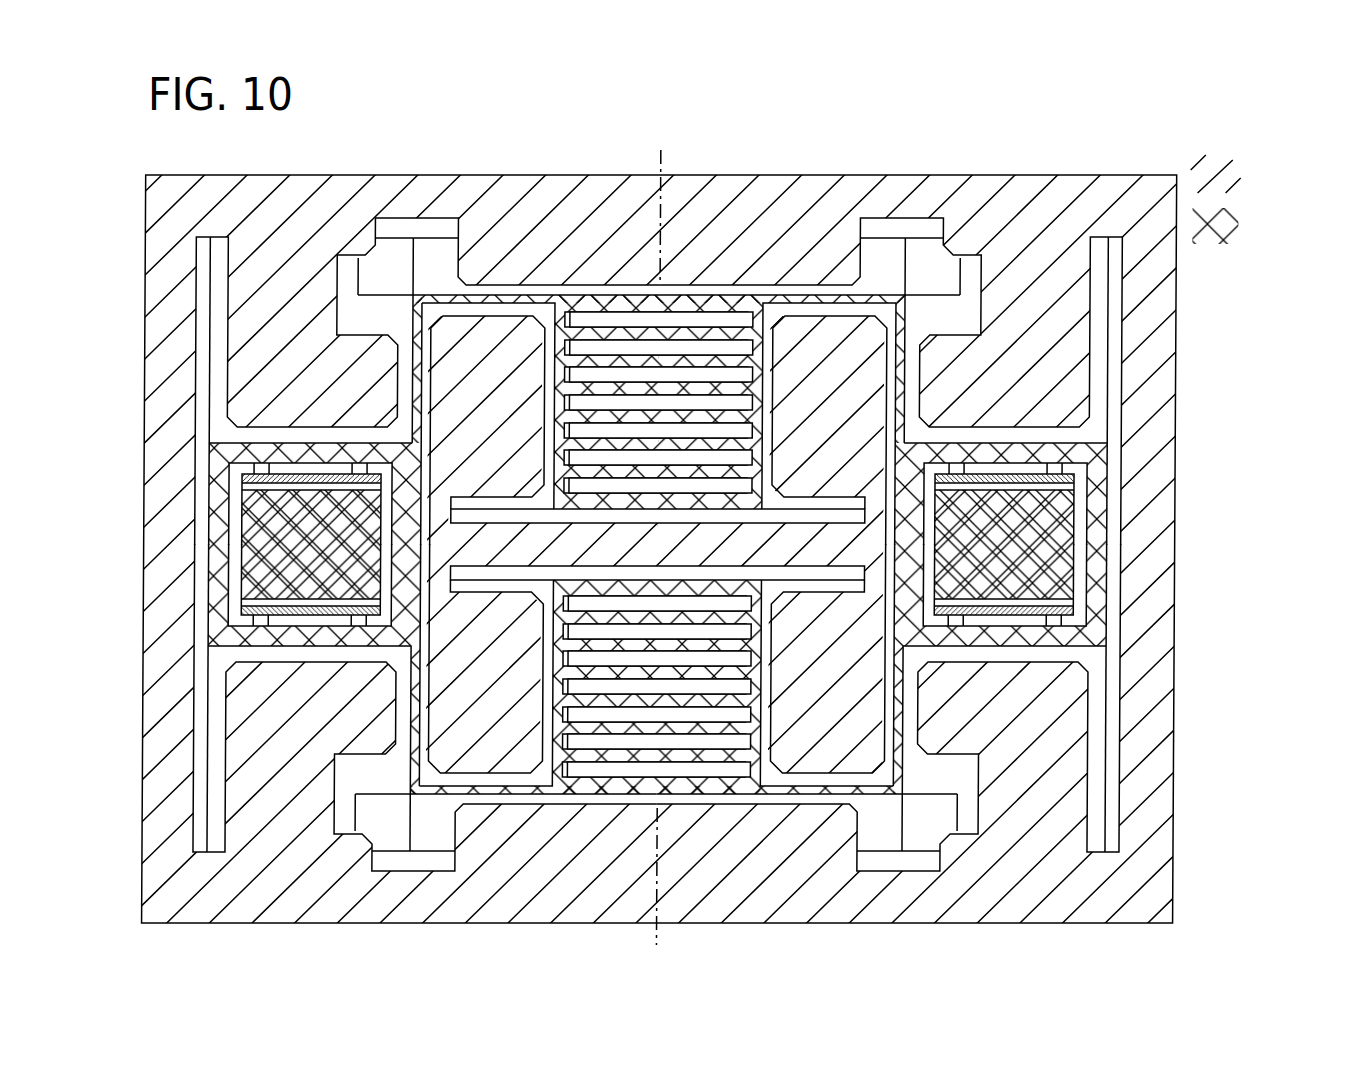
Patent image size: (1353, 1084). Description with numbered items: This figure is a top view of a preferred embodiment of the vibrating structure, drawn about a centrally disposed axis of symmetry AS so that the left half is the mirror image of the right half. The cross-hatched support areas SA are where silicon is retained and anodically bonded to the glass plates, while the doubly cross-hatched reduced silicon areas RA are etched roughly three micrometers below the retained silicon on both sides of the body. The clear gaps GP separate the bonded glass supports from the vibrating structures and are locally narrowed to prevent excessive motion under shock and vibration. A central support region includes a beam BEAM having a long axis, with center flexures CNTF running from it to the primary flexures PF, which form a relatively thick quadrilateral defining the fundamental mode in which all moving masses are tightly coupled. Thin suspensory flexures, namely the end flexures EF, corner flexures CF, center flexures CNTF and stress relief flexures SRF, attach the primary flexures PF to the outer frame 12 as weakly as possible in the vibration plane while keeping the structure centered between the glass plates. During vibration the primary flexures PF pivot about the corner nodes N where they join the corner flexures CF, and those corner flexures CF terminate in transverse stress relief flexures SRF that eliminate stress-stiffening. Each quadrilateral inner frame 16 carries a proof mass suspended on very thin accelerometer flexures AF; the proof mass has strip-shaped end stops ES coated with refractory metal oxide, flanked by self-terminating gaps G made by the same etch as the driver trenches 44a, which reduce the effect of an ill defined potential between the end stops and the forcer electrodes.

The outer frame 12 is at (1048, 926).
The inner frame 16 is at (1195, 492).
The driver trenches 44a is at (748, 428).
The axis of symmetry AS is at (664, 163).
The support areas SA is at (1238, 176).
The reduced silicon areas RA is at (1238, 226).
The stress relief flexures SRF is at (353, 262).
The corner flexures CF is at (388, 294).
The corner nodes N is at (413, 294).
The primary flexures PF is at (404, 382).
The gaps GP is at (418, 326).
The end flexures EF is at (205, 336).
The accelerometer flexures AF is at (353, 462).
The end stops ES is at (283, 477).
The grooves (gaps) G is at (333, 470).
The center flexures CNTF is at (497, 508).
The beam BEAM is at (657, 544).